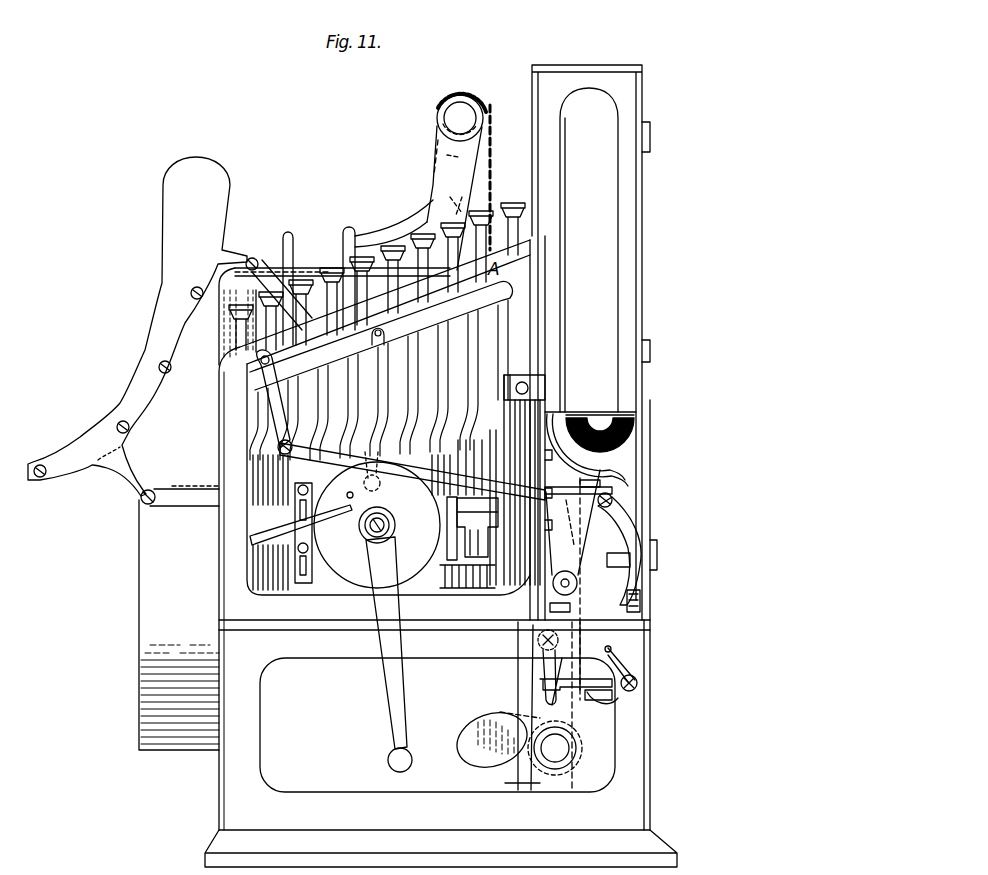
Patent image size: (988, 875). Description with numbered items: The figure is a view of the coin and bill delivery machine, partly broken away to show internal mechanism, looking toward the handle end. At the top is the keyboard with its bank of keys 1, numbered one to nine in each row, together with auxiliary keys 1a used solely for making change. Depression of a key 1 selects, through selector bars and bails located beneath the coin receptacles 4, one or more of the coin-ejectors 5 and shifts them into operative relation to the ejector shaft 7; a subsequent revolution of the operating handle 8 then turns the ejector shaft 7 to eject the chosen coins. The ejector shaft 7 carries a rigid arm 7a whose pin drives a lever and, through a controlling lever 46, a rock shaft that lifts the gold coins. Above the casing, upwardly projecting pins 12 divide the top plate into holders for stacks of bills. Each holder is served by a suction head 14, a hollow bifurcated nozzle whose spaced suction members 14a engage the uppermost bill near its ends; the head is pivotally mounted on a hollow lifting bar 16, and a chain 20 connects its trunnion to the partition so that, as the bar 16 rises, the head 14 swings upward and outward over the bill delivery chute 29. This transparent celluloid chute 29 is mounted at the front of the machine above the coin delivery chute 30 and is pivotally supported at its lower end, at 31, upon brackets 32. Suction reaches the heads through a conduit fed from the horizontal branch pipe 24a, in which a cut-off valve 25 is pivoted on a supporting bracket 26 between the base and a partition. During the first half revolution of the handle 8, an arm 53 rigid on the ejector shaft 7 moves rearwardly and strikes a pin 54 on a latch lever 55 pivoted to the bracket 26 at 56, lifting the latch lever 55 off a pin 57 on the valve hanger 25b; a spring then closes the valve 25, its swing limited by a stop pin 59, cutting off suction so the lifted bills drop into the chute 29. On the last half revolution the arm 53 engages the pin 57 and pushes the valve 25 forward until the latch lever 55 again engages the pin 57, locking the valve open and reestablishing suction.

The keys 1 is at (331, 245).
The auxiliary keys 1a is at (514, 206).
The coin receptacles 4 is at (228, 332).
The coin-ejectors 5 is at (575, 480).
The ejector shaft 7 is at (577, 583).
The arm 7a is at (573, 518).
The operating handle 8 is at (388, 760).
The pins 12 is at (290, 246).
The suction head 14 is at (440, 153).
The suction members 14a is at (366, 232).
The lifting bar 16 is at (456, 182).
The chain 20 is at (500, 178).
The horizontal branch pipe 24a is at (555, 748).
The cut-off valve 25 is at (482, 735).
The valve hanger 25b is at (520, 715).
The supporting bracket 26 is at (509, 784).
The bill delivery chute 29 is at (137, 326).
The coin delivery chute 30 is at (179, 625).
The pivot 31 is at (140, 505).
The brackets 32 is at (186, 507).
The controlling lever 46 is at (262, 250).
The arm 53 is at (572, 670).
The pin 54 is at (612, 649).
The latch lever 55 is at (598, 704).
The pivot 56 is at (637, 683).
The pin 57 is at (560, 685).
The pin 59 is at (614, 709).